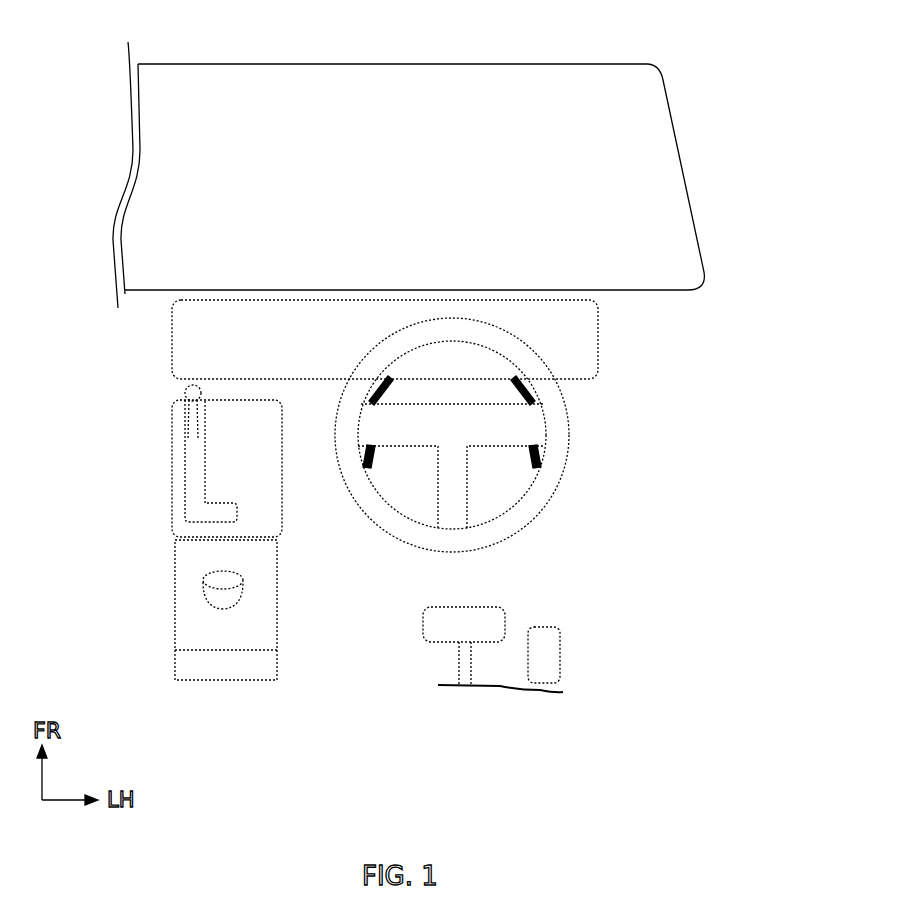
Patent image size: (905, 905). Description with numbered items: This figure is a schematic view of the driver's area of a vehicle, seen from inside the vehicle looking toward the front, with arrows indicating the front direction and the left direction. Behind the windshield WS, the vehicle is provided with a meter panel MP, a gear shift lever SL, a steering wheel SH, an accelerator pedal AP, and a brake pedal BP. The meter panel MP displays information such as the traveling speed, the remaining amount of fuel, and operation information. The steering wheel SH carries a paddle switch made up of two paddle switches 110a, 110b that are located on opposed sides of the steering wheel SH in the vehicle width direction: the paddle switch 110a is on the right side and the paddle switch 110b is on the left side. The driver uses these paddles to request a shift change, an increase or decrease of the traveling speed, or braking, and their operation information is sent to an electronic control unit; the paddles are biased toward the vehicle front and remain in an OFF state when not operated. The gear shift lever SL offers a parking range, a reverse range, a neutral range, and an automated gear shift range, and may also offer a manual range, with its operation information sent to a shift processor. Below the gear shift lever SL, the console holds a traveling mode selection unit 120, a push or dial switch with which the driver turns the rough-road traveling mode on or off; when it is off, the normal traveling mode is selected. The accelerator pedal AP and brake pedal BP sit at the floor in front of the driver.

The windshield WS is at (670, 78).
The meter panel MP is at (590, 347).
The steering wheel SH is at (482, 314).
The paddle switch 110a is at (530, 400).
The paddle switch 110b is at (383, 388).
The gear shift lever SL is at (170, 450).
The traveling mode selection unit 120 is at (198, 590).
The brake pedal BP is at (463, 626).
The accelerator pedal AP is at (547, 650).